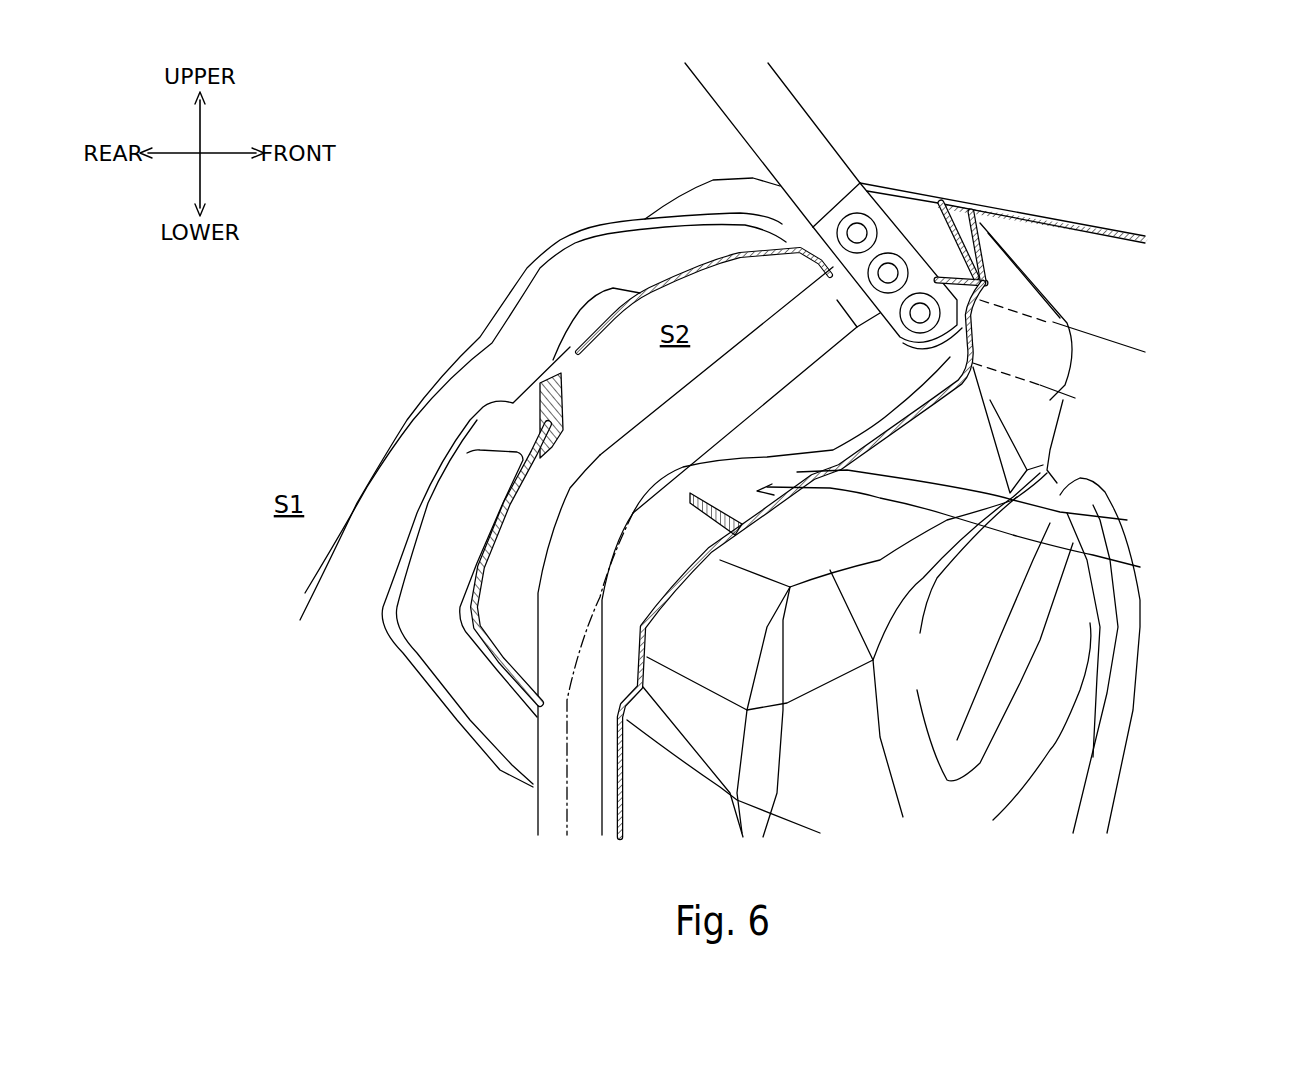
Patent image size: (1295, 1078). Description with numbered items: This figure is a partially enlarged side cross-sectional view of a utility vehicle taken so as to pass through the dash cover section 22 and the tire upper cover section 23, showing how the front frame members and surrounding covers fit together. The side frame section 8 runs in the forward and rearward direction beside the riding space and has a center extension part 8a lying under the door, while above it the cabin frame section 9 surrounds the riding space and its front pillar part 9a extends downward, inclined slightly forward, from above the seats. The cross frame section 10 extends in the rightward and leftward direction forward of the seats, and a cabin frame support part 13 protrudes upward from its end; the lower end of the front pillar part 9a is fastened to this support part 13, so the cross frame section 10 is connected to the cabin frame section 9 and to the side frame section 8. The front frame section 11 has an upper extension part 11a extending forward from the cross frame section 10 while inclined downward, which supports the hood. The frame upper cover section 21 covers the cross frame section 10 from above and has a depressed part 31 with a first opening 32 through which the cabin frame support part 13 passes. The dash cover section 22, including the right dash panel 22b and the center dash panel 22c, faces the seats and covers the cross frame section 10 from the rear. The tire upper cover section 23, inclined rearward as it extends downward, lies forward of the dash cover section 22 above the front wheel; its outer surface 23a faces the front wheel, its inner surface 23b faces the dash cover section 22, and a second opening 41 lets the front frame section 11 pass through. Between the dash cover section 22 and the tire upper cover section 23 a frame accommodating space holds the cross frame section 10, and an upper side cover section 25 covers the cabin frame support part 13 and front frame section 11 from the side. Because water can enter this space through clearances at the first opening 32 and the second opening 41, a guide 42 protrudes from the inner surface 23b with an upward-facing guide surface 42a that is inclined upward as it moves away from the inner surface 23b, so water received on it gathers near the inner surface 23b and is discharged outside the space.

The side frame section 8 is at (553, 642).
The center extension part 8a is at (550, 727).
The cabin frame section 9 is at (810, 110).
The front pillar part 9a is at (827, 130).
The cross frame section 10 is at (992, 272).
The front frame section 11 is at (1113, 333).
The upper extension part 11a is at (1137, 350).
The cabin frame support part 13 is at (870, 207).
The frame upper cover section 21 is at (948, 198).
The dash cover section 22 is at (383, 453).
The right dash panel 22b is at (500, 430).
The center dash panel 22c is at (508, 297).
The tire upper cover section 23 is at (1067, 645).
The outer surface 23a is at (1082, 703).
The inner surface 23b is at (620, 783).
The upper side cover section 25 is at (1095, 232).
The depressed part 31 is at (957, 205).
The first opening 32 is at (950, 272).
The second opening 41 is at (1080, 337).
The guide 42 is at (1140, 567).
The guide surface 42a is at (1127, 520).